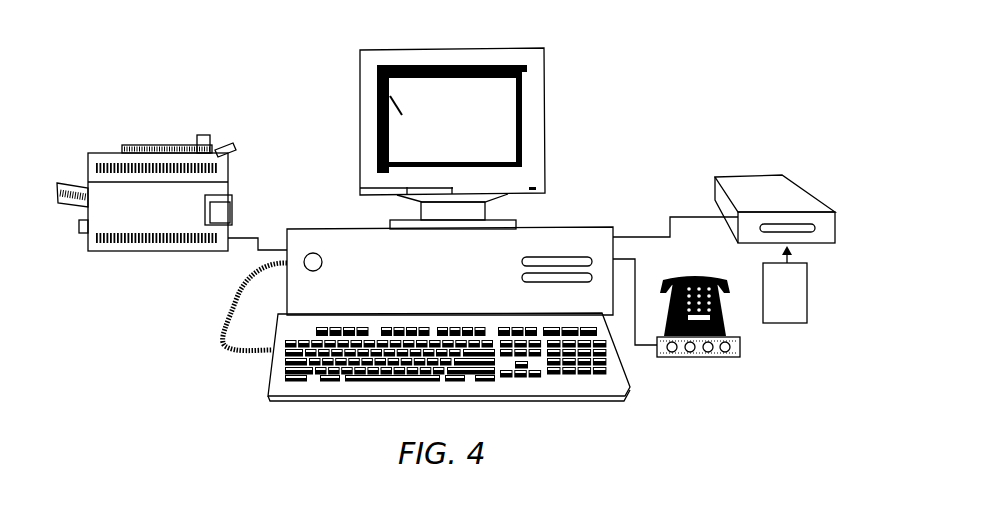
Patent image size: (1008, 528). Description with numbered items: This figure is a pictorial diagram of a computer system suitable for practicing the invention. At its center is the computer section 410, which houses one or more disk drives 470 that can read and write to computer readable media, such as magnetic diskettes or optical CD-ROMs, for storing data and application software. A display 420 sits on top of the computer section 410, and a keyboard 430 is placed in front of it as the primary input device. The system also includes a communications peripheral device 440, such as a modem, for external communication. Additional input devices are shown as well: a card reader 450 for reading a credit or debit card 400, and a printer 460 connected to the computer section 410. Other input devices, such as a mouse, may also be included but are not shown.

The credit or debit card 400 is at (803, 305).
The computer section 410 is at (345, 230).
The display 420 is at (360, 63).
The keyboard 430 is at (542, 386).
The communications peripheral device 440 is at (720, 337).
The card reader 450 is at (732, 188).
The printer 460 is at (158, 251).
The disk drives 470 is at (558, 258).